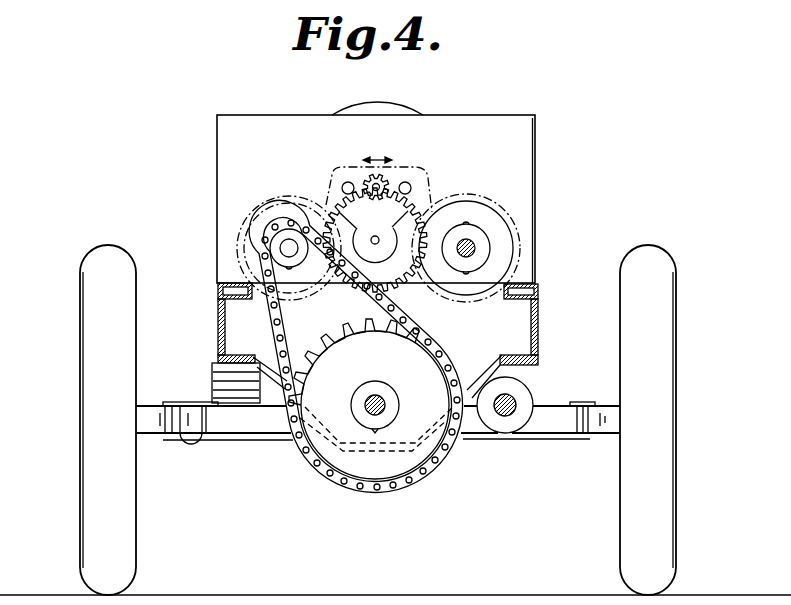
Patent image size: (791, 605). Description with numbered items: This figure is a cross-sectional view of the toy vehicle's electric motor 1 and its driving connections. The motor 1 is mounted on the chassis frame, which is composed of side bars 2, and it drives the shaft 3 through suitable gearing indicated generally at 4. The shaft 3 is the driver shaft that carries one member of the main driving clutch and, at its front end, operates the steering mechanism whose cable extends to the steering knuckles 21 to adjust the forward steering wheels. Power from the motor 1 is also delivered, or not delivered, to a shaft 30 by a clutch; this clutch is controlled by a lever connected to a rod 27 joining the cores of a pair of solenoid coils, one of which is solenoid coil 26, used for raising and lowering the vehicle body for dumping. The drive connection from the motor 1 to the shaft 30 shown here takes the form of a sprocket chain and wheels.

The electric motor 1 is at (236, 152).
The side bars 2 is at (217, 325).
The shaft 3 is at (476, 246).
The gearing 4 is at (326, 205).
The steering knuckles 21 is at (182, 416).
The solenoid coil 26 is at (497, 418).
The rod 27 is at (508, 414).
The shaft 30 is at (368, 417).